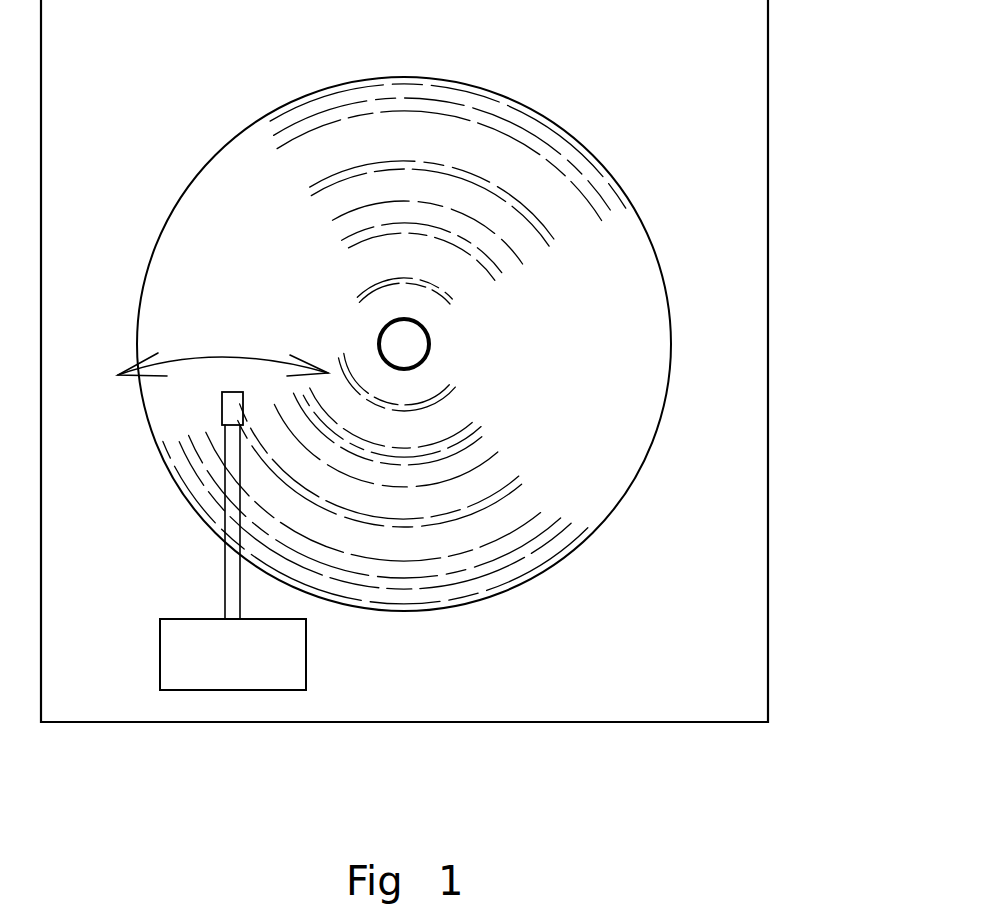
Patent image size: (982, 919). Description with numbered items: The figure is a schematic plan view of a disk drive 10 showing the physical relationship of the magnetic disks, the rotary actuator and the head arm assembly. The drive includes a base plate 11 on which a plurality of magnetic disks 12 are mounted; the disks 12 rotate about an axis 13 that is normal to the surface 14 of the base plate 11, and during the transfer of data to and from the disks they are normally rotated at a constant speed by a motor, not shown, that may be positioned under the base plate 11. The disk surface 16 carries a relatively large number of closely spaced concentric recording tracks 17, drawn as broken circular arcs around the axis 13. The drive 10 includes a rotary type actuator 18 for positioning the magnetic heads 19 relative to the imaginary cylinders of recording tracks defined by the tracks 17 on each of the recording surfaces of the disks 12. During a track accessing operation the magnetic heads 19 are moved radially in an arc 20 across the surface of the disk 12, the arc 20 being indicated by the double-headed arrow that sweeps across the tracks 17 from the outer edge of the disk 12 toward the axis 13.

The drive 10 is at (469, 391).
The base plate 11 is at (768, 136).
The magnetic disks 12 is at (607, 519).
The axis 13 is at (411, 318).
The surface 14 is at (120, 703).
The disk surface 16 is at (400, 76).
The recording tracks 17 is at (425, 560).
The rotary type actuator 18 is at (306, 665).
The magnetic heads 19 is at (228, 410).
The arc 20 is at (224, 357).